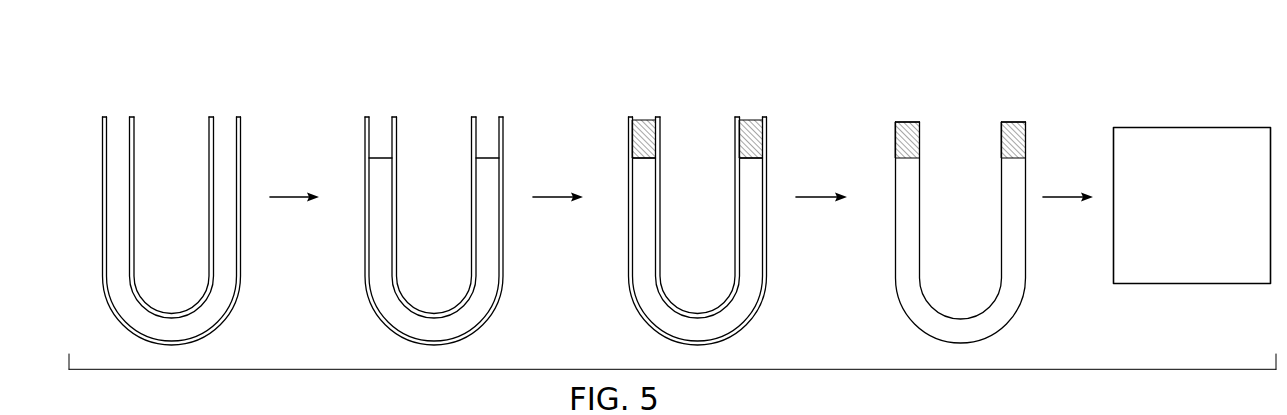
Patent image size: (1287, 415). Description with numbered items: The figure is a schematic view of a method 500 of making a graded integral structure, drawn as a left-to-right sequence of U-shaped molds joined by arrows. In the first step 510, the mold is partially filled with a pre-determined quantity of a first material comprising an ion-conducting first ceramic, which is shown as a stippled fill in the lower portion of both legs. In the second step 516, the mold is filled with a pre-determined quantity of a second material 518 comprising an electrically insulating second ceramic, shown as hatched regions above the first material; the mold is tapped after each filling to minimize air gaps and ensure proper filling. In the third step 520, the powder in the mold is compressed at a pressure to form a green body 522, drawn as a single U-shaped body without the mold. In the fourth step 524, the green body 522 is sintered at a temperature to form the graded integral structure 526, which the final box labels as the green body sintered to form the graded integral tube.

The method 500 is at (110, 72).
The first step 510 is at (372, 70).
The second step 516 is at (635, 70).
The second material 518 is at (648, 137).
The third step 520 is at (897, 72).
The green body 522 is at (895, 278).
The fourth step 524 is at (1143, 72).
The graded integral structure 526 is at (1193, 284).